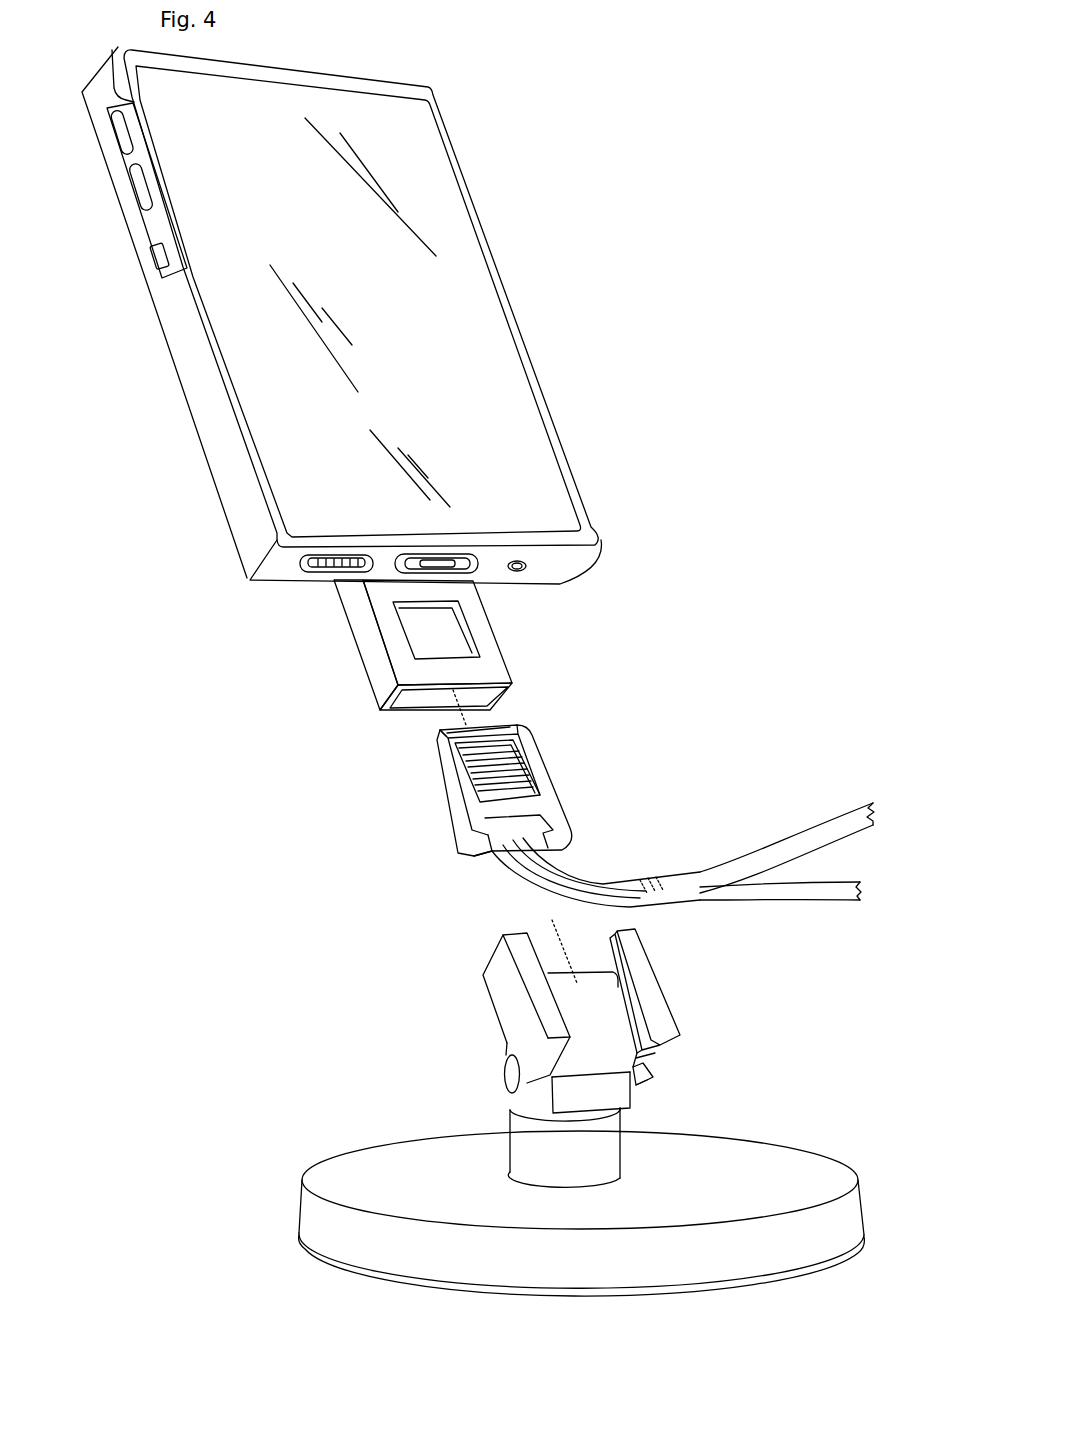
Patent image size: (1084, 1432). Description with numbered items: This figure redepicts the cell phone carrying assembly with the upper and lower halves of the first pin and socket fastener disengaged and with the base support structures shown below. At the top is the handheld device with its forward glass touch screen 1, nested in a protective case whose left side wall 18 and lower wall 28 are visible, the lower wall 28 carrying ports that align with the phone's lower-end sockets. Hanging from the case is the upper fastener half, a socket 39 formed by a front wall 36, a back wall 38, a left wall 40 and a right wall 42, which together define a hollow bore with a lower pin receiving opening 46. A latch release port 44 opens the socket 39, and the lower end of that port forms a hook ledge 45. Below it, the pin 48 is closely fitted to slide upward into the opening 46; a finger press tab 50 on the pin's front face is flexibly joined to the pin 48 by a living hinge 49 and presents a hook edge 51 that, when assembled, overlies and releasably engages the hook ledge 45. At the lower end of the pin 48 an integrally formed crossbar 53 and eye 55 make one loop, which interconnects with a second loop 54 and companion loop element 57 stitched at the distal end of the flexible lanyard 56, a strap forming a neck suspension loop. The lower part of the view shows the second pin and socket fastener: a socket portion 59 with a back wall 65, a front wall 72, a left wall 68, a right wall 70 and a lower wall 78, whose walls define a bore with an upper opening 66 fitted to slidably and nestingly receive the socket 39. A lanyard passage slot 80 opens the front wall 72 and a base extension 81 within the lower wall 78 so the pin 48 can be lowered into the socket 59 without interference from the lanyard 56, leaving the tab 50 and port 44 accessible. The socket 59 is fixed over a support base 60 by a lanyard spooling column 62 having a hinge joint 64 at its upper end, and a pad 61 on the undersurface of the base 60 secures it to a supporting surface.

The glass touch screen 1 is at (478, 326).
The left side wall 18 is at (188, 365).
The lower wall 28 is at (550, 567).
The front wall 36 is at (468, 605).
The back wall 38 is at (440, 729).
The socket 39 is at (423, 671).
The left wall 40 is at (353, 603).
The right wall 42 is at (483, 717).
The latch release port 44 is at (450, 638).
The hook ledge 45 is at (430, 657).
The lower pin receiving opening 46 is at (413, 716).
The pin 48 is at (433, 819).
The living hinge 49 is at (443, 732).
The finger press tab 50 is at (487, 777).
The hook edge 51 is at (508, 800).
The crossbar 53 is at (493, 847).
The second loop 54 is at (597, 880).
The eye 55 is at (487, 818).
The flexible lanyard 56 is at (790, 837).
The loop pair element 57 is at (650, 883).
The socket portion 59 is at (595, 1012).
The support base 60 is at (803, 1163).
The pad 61 is at (840, 1268).
The lanyard spooling column 62 is at (538, 1157).
The hinge joint 64 is at (510, 1087).
The back wall 65 is at (590, 1090).
The upper opening 66 is at (595, 1012).
The left wall 68 is at (510, 1002).
The right wall 70 is at (617, 980).
The front wall 72 is at (543, 940).
The lower wall 78 is at (513, 1092).
The lanyard passage slot 80 is at (597, 1010).
The base extension 81 is at (640, 1068).